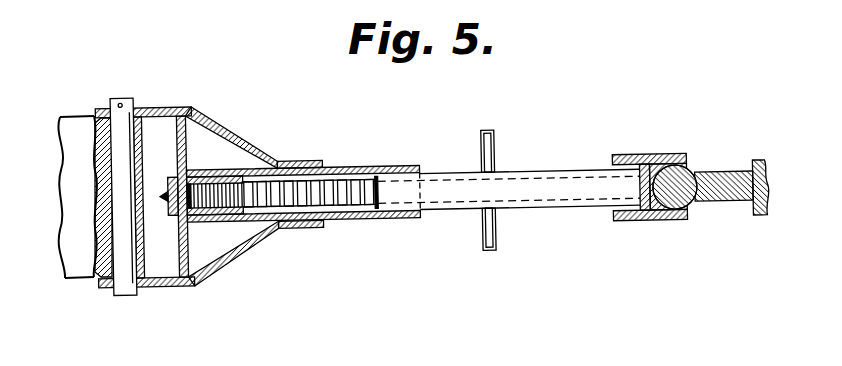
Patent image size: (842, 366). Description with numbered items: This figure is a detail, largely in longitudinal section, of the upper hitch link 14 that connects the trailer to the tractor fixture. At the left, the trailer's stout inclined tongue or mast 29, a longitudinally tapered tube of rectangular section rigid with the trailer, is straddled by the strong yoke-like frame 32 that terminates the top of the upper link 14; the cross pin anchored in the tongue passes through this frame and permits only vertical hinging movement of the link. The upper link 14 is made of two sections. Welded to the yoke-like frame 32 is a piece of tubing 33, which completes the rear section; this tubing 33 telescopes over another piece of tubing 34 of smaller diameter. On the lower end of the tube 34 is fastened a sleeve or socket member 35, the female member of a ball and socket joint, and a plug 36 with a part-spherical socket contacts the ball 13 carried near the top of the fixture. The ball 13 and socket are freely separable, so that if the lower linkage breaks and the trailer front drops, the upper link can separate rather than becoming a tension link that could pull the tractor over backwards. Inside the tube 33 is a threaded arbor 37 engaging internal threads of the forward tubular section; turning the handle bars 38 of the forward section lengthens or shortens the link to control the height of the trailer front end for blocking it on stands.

The tongue or mast 29 is at (78, 275).
The yoke-like frame 32 is at (163, 109).
The piece of tubing 33 is at (364, 170).
The tubing of smaller diameter 34 is at (512, 210).
The upper link 14 is at (458, 214).
The sleeve or socket member 35 is at (637, 219).
The plug 36 is at (650, 163).
The threaded arbor 37 is at (301, 165).
The handle bars 38 is at (494, 146).
The ball 13 is at (681, 182).